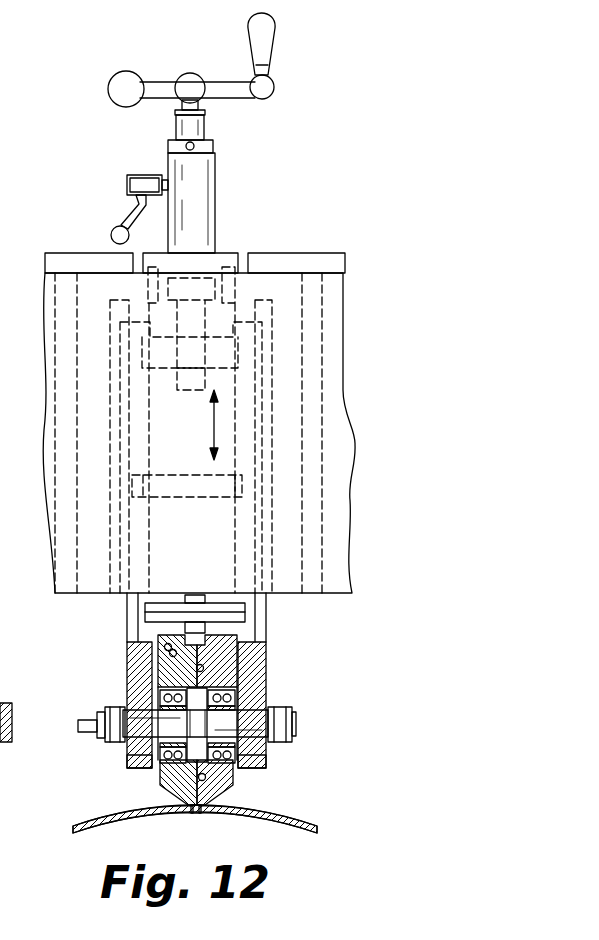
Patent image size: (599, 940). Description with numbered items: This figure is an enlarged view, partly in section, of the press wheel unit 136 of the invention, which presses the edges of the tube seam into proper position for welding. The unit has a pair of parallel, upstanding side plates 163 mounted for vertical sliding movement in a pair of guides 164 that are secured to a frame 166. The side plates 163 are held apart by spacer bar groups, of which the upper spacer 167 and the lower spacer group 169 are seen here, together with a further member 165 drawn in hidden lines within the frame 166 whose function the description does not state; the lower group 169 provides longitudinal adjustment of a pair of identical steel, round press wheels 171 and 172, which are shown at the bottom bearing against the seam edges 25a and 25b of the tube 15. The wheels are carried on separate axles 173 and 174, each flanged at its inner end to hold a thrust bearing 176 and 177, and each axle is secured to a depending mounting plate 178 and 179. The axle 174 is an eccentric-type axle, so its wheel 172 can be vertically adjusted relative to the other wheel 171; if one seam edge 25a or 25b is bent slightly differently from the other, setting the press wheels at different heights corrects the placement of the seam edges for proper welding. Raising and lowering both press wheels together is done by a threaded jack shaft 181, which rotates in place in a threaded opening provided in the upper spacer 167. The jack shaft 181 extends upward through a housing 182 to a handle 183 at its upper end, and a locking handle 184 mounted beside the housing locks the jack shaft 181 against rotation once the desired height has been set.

The press wheel unit 136 is at (283, 149).
The handle 183 is at (220, 86).
The housing 182 is at (208, 200).
The locking handle 184 is at (127, 213).
The threaded jack shaft 181 is at (212, 322).
The frame 166 is at (323, 270).
The upper spacer bar group 167 is at (255, 348).
The slide block 165 is at (237, 485).
The guides 164 is at (270, 572).
The lower spacer bar group 169 is at (237, 612).
The side plates 163 is at (127, 657).
The thrust bearing 176 is at (160, 693).
The thrust bearing 177 is at (236, 695).
The eccentric-type axle 174 is at (254, 737).
The axle 173 is at (126, 746).
The depending mounting plate 179 is at (263, 759).
The depending mounting plate 178 is at (127, 764).
The press wheel 171 is at (160, 786).
The press wheel 172 is at (224, 790).
The seam edge 25a is at (192, 818).
The seam edge 25b is at (194, 820).
The tube 15 is at (298, 833).